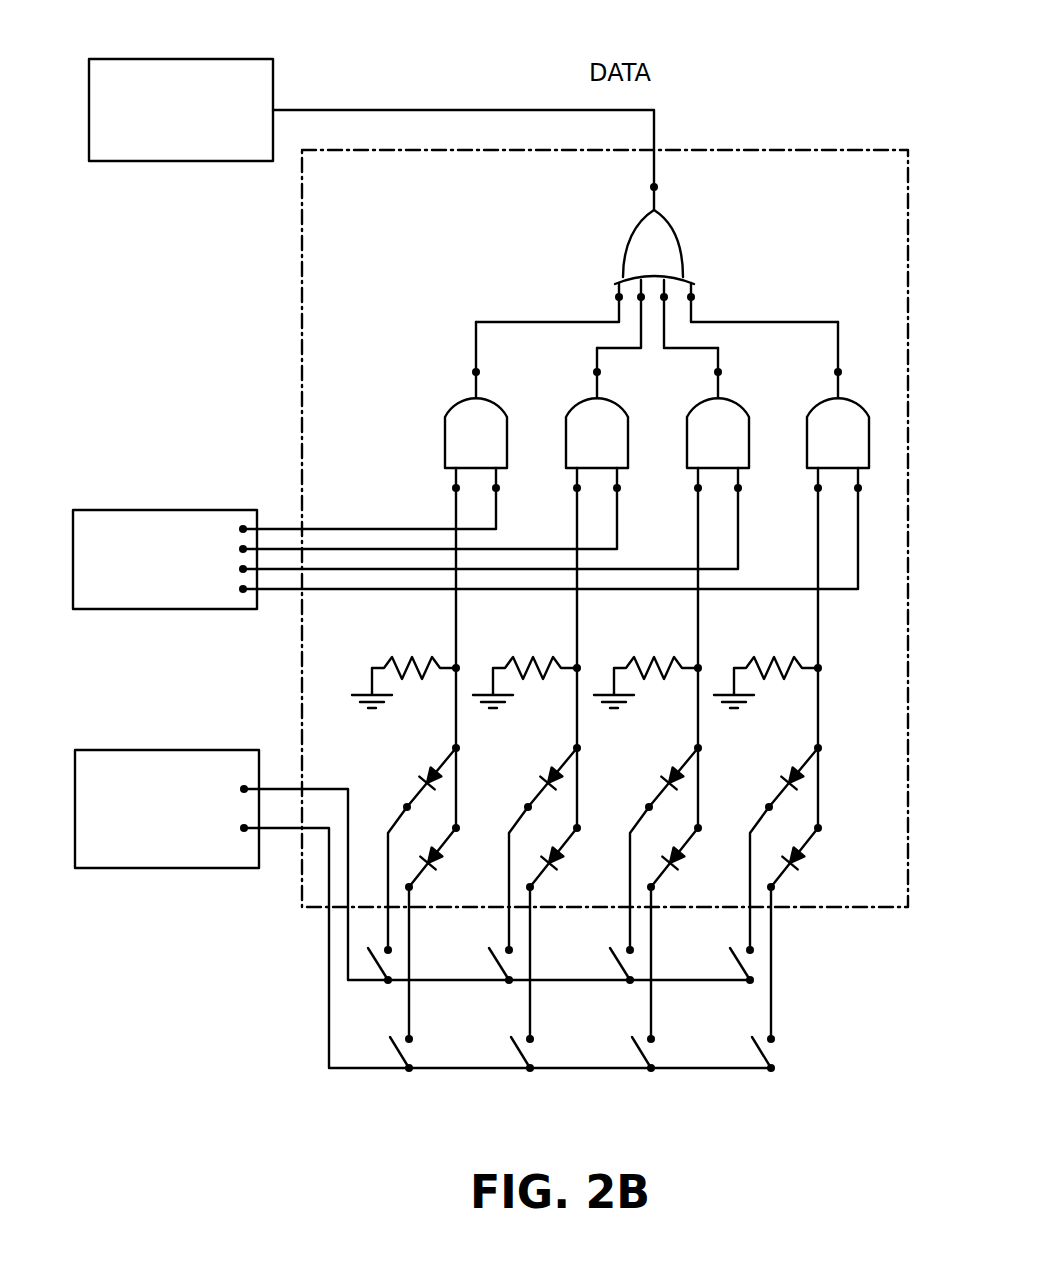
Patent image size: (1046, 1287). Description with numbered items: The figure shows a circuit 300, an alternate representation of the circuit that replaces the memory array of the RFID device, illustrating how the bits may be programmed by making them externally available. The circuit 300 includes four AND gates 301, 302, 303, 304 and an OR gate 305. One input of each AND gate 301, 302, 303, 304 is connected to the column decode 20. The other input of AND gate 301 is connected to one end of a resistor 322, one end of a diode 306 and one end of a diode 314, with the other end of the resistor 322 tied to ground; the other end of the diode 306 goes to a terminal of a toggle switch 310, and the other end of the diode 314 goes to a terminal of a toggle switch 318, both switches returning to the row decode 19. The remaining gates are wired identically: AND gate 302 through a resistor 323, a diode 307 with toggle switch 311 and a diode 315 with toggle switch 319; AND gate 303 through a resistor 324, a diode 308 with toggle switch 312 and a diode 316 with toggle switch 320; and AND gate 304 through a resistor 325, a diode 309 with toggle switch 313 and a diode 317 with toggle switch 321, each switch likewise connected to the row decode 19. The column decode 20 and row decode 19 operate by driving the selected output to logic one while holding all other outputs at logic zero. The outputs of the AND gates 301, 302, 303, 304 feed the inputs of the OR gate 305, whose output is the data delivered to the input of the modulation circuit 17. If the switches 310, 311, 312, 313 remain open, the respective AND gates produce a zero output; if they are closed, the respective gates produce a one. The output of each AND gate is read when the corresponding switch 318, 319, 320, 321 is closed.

The modulation circuit 17 is at (185, 59).
The row decode 19 is at (185, 750).
The column decode 20 is at (170, 510).
The circuit 300 is at (838, 150).
The AND gate 301 is at (446, 432).
The AND gate 302 is at (571, 408).
The AND gate 303 is at (691, 408).
The AND gate 304 is at (814, 395).
The OR gate 305 is at (623, 255).
The diode 306 is at (418, 775).
The diode 307 is at (525, 842).
The diode 308 is at (650, 842).
The diode 309 is at (770, 842).
The toggle switch 310 is at (378, 966).
The toggle switch 311 is at (472, 956).
The toggle switch 312 is at (593, 956).
The toggle switch 313 is at (709, 954).
The diode 314 is at (441, 868).
The diode 315 is at (573, 933).
The diode 316 is at (691, 933).
The diode 317 is at (811, 933).
The toggle switch 318 is at (393, 1053).
The toggle switch 319 is at (487, 1043).
The toggle switch 320 is at (608, 1043).
The toggle switch 321 is at (725, 1043).
The resistor 322 is at (413, 655).
The resistor 323 is at (525, 657).
The resistor 324 is at (647, 657).
The resistor 325 is at (766, 657).